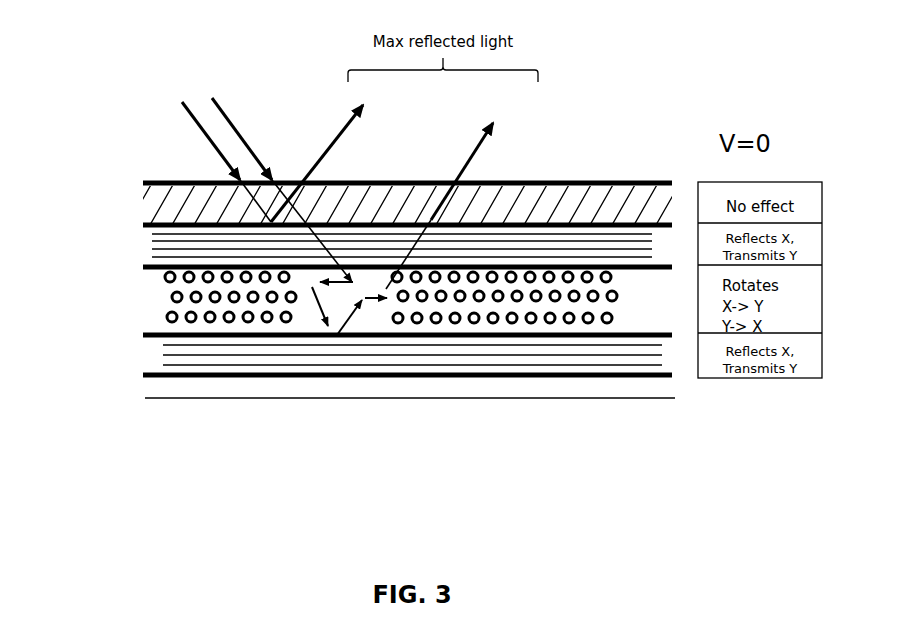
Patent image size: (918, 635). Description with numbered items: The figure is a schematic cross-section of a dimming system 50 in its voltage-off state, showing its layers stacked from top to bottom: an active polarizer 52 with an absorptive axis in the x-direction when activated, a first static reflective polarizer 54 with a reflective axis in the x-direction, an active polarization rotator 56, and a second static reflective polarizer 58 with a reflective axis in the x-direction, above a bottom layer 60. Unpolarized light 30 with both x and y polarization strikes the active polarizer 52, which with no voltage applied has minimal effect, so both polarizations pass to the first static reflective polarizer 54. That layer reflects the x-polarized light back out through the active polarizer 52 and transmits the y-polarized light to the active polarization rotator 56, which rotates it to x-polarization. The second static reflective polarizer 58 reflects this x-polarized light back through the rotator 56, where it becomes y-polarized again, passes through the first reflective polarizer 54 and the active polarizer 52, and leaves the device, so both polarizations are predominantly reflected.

The unpolarized light 30 is at (231, 95).
The system 50 is at (72, 133).
The active polarizer 52 is at (140, 207).
The first static reflective polarizer 54 is at (140, 250).
The active polarization rotator 56 is at (140, 288).
The second static reflective polarizer 58 is at (140, 357).
The rear substrate 60 is at (140, 395).